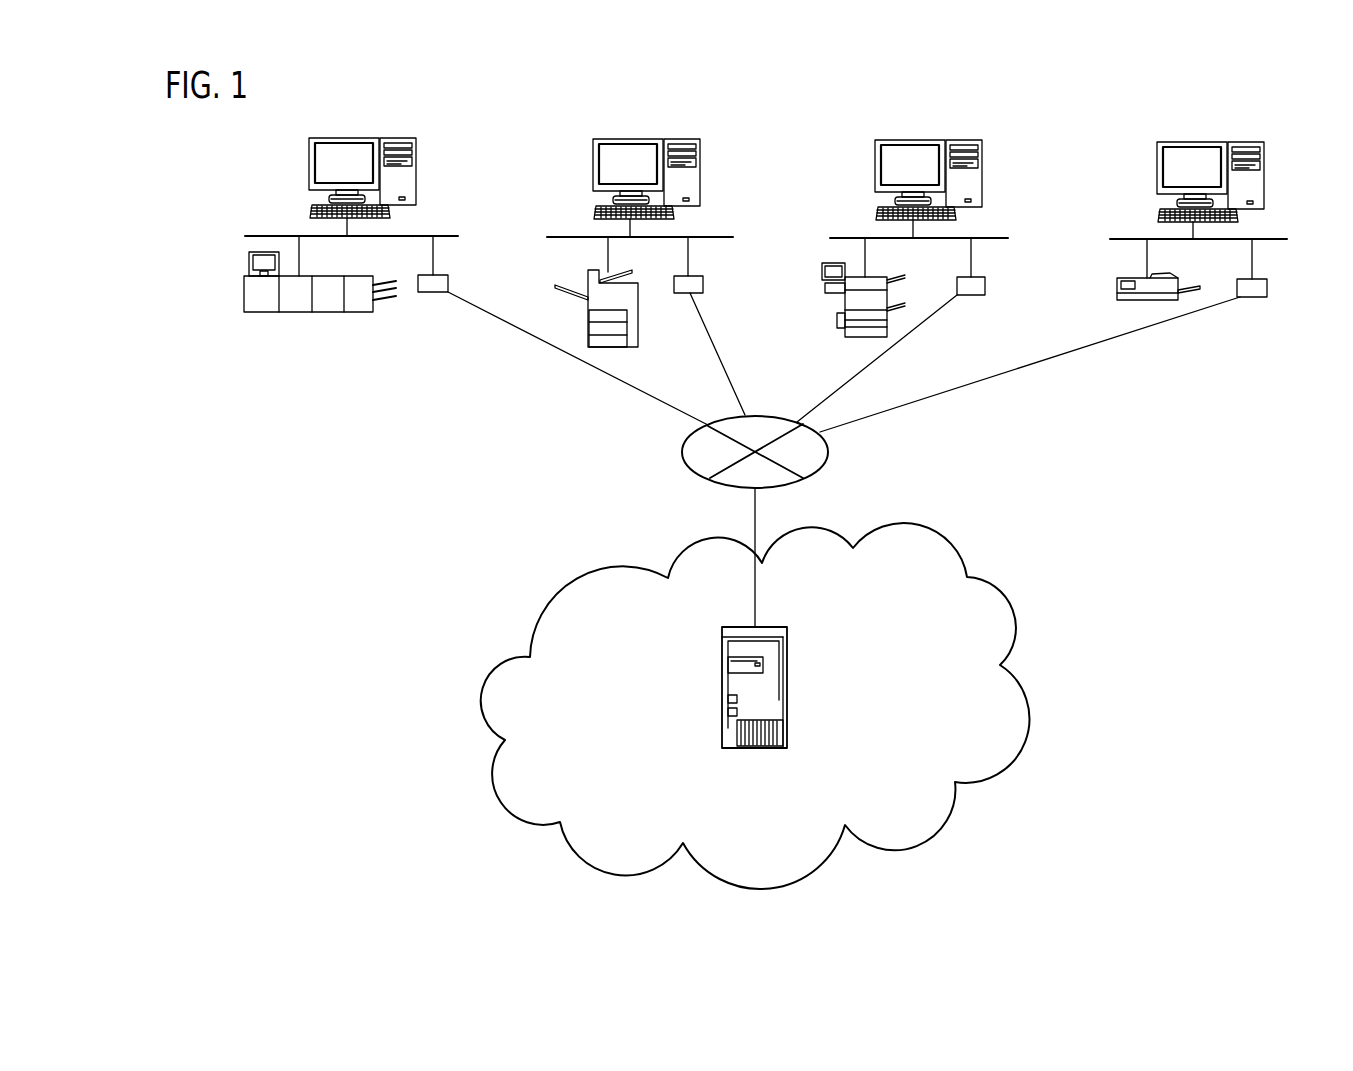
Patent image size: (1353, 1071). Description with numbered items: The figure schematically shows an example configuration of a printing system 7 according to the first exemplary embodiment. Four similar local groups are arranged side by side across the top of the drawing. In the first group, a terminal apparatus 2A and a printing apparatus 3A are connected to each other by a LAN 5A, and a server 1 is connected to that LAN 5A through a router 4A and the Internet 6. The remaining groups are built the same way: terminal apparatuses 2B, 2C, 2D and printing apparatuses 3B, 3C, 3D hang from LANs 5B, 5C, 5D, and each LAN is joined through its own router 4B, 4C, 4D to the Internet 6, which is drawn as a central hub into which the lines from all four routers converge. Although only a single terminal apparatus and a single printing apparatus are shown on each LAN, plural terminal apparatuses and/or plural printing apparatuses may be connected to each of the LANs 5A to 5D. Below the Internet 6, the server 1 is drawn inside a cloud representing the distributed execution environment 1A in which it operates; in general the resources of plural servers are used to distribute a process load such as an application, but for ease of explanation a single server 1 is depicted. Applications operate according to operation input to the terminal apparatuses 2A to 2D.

The server 1 is at (785, 662).
The distributed execution environment 1A is at (1000, 590).
The terminal apparatus 2A is at (343, 137).
The terminal apparatus 2B is at (625, 138).
The terminal apparatus 2C is at (905, 139).
The terminal apparatus 2D is at (1188, 142).
The printing apparatus 3A is at (258, 313).
The printing apparatus 3B is at (588, 280).
The printing apparatus 3C is at (833, 265).
The printing apparatus 3D is at (1135, 278).
The router 4A is at (427, 293).
The router 4B is at (703, 283).
The router 4C is at (985, 283).
The router 4D is at (1267, 287).
The LAN 5A is at (425, 234).
The LAN 5B is at (708, 235).
The LAN 5C is at (986, 237).
The LAN 5D is at (1273, 238).
The Internet 6 is at (830, 453).
The printing system 7 is at (1132, 77).